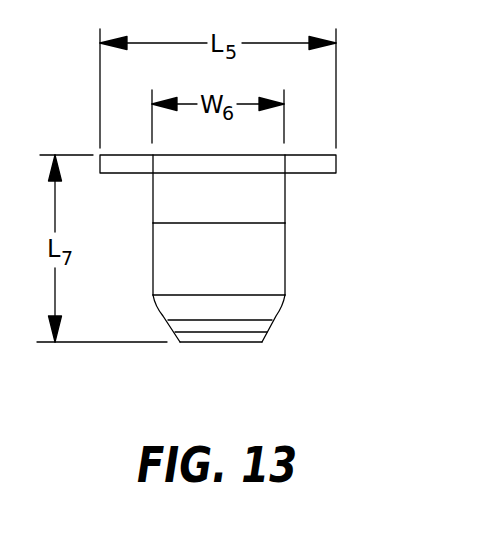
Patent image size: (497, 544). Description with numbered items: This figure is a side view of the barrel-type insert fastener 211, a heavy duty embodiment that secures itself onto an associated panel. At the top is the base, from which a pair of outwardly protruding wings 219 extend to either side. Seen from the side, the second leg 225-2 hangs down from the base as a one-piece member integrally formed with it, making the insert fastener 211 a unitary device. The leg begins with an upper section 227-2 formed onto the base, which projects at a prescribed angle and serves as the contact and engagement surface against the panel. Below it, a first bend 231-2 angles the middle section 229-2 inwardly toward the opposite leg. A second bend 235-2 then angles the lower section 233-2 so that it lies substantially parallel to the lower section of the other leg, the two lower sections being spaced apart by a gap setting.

The insert fastener 211 is at (265, 383).
The wings 219 is at (97, 167).
The second leg 225-2 is at (91, 299).
The upper section 227-2 is at (264, 185).
The middle section 229-2 is at (263, 265).
The first bend 231-2 is at (242, 223).
The lower section 233-2 is at (263, 330).
The second bend 235-2 is at (262, 302).